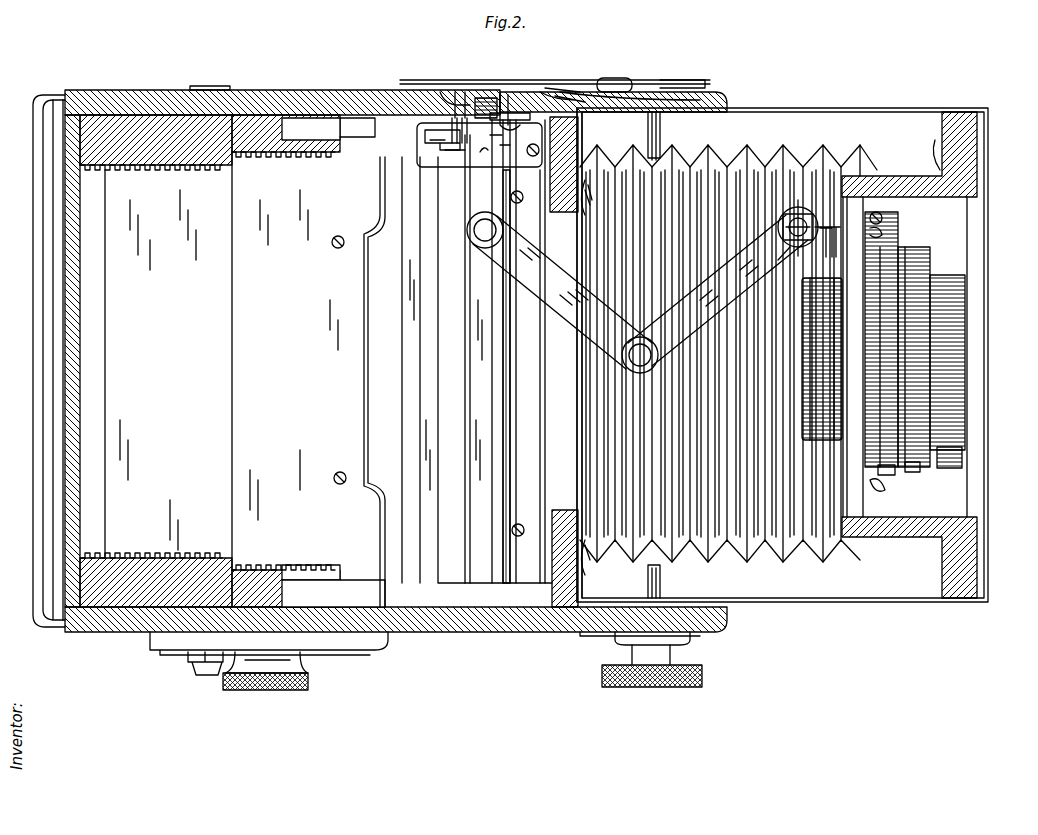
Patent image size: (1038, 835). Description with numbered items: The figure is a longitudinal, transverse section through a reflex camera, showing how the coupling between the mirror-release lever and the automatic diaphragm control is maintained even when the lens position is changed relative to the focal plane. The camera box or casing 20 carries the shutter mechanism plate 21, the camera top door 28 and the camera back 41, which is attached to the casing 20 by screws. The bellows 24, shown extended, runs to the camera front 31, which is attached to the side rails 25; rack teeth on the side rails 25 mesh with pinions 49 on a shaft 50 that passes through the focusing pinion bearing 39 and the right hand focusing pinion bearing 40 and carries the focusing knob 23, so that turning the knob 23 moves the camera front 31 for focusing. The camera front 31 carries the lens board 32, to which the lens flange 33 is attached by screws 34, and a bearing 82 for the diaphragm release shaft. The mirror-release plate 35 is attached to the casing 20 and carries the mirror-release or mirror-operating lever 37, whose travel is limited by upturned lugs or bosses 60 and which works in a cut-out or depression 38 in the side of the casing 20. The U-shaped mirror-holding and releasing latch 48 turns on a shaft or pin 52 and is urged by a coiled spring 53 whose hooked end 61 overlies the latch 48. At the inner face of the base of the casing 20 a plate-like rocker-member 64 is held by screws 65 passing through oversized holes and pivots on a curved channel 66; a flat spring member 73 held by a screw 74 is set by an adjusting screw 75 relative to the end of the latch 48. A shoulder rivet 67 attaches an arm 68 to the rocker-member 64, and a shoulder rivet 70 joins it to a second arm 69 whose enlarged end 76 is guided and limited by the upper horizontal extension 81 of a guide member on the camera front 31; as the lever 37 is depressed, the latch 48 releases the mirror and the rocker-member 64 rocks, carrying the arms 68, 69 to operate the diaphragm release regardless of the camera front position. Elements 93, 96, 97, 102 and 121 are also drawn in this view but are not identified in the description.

The camera box or casing 20 is at (300, 92).
The shutter mechanism plate 21 is at (365, 652).
The focusing knob 23 is at (702, 676).
The bellows 24 is at (740, 160).
The camera front side rails 25 is at (842, 112).
The camera top door 28 is at (975, 378).
The camera front 31 is at (975, 150).
The lens board 32 is at (868, 512).
The lens flange 33 is at (880, 212).
The screw 34 is at (889, 230).
The mirror-release plate 35 is at (486, 96).
The mirror-release or mirror-operating lever 37 is at (612, 78).
The cut-out or depression 38 is at (644, 92).
The focusing pinion bearing 39 is at (688, 84).
The right hand focusing pinion bearing 40 is at (690, 636).
The camera back 41 is at (45, 305).
The mirror-holding and releasing latch 48 is at (425, 140).
The pinion 49 is at (498, 120).
The shaft 50 is at (662, 150).
The shaft or pin 52 is at (440, 122).
The coiled spring 53 is at (442, 90).
The upturned lugs or bosses 60 is at (560, 90).
The hooked end 61 is at (504, 96).
The rocker-member 64 is at (492, 365).
The screw 65 is at (522, 203).
The curved channel 66 is at (520, 483).
The shoulder rivet 67 is at (483, 240).
The arm 68 is at (570, 320).
The second arm 69 is at (758, 285).
The shoulder rivet 70 is at (633, 350).
The flat spring member 73 is at (420, 157).
The screw 74 is at (500, 160).
The adjusting screw 75 is at (509, 147).
The enlarged end 76 is at (804, 205).
The upper horizontal extension 81 is at (776, 256).
The bearing 82 is at (827, 225).
The lens stop block 93 is at (962, 458).
The lens barrel 96 is at (965, 333).
The lens barrel 97 is at (808, 336).
The lens ring 102 is at (920, 250).
The catch 121 is at (928, 470).